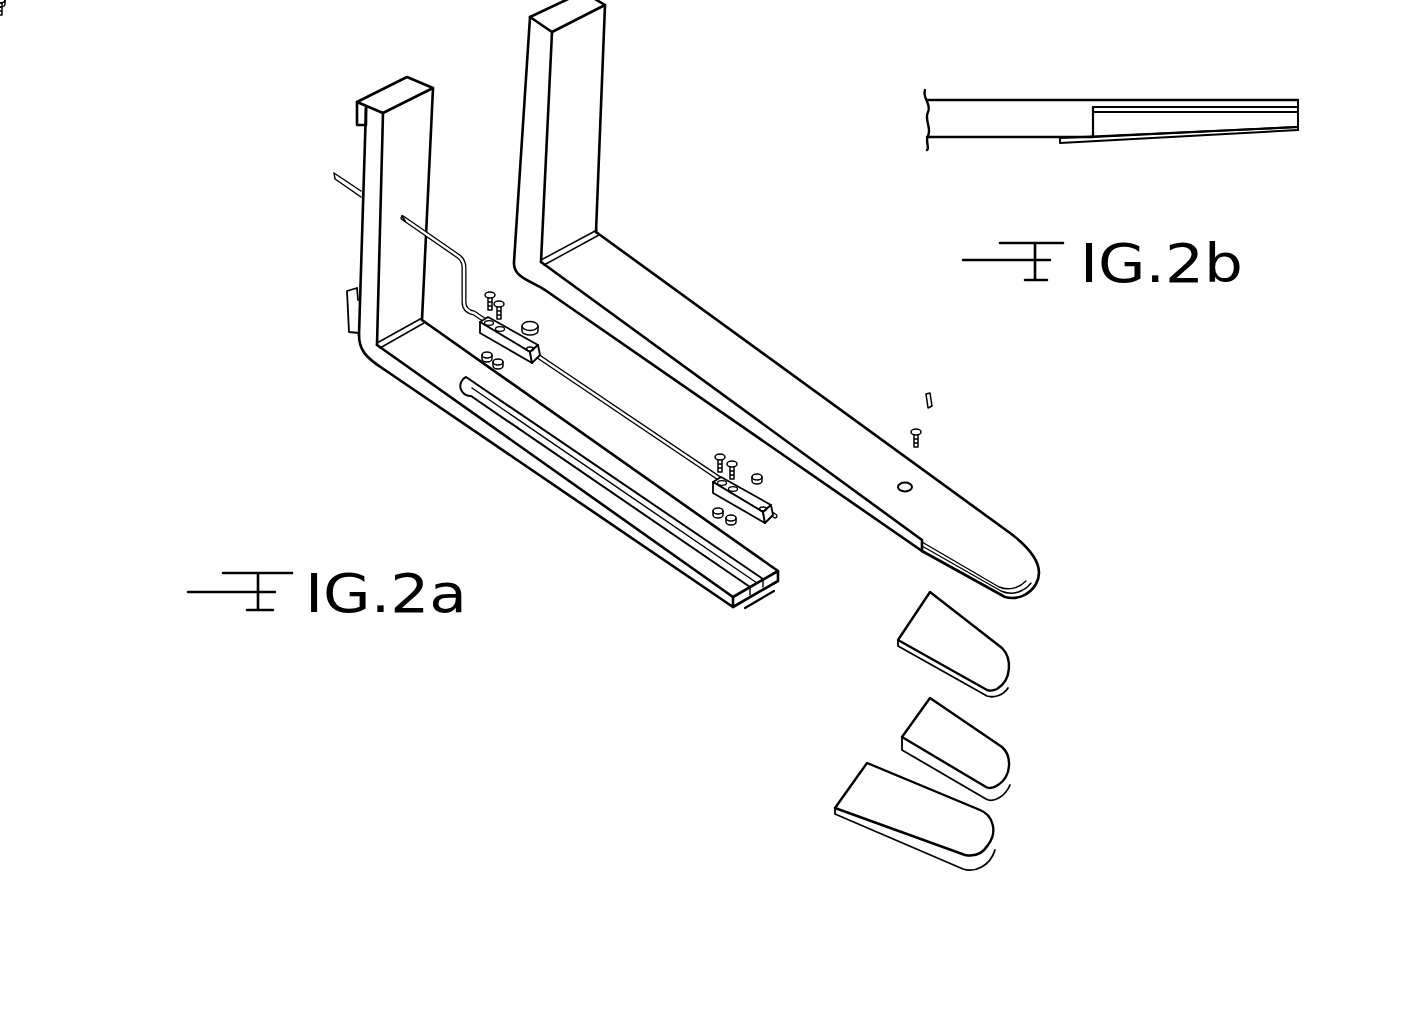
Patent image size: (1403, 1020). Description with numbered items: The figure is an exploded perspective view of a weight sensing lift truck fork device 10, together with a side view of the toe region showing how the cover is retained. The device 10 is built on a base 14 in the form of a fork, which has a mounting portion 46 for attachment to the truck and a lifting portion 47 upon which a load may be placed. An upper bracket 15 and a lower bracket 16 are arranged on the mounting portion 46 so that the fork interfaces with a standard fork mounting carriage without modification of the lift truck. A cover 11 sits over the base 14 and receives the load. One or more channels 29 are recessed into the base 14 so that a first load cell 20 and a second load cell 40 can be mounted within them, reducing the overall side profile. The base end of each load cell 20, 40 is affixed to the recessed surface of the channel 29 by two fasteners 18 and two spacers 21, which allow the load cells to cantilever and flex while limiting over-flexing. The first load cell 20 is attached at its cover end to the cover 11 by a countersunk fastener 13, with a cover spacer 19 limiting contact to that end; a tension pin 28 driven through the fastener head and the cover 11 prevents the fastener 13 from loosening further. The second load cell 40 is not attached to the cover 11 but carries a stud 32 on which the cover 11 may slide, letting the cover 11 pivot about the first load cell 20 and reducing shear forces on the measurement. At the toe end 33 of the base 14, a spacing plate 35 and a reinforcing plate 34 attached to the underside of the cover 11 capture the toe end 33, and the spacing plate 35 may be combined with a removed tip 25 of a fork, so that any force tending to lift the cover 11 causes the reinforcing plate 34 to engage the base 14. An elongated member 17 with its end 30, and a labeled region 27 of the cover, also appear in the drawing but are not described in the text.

In FIG. 2A, the device 10 is at (573, 435).
In FIG. 2A, the cover 11 is at (776, 299).
In FIG. 2A, the fastener 13 is at (922, 432).
In FIG. 2A, the base 14 is at (533, 372).
In FIG. 2A, the upper bracket 15 is at (376, 93).
In FIG. 2A, the lower bracket 16 is at (348, 318).
In FIG. 2A, the rod 17 is at (437, 240).
In FIG. 2A, the fasteners 18 is at (490, 292).
In FIG. 2A, the cover spacer 19 is at (762, 478).
In FIG. 2A, the first load cell 20 is at (772, 514).
In FIG. 2A, the spacers 21 is at (484, 353).
In FIG. 2A, the removed tip 25 is at (1005, 766).
In FIG. 2B, the removed tip 25 is at (1127, 120).
In FIG. 2A, the fork blade 27 is at (752, 399).
In FIG. 2B, the fork blade 27 is at (1048, 99).
In FIG. 2A, the tension pin 28 is at (932, 398).
In FIG. 2A, the channel 29 is at (517, 412).
In FIG. 2A, the rod end 30 is at (400, 221).
In FIG. 2A, the stud 32 is at (538, 327).
In FIG. 2A, the toe end 33 is at (762, 606).
In FIG. 2A, the reinforcing plate 34 is at (995, 826).
In FIG. 2B, the reinforcing plate 34 is at (1198, 147).
In FIG. 2A, the spacing plate 35 is at (1003, 655).
In FIG. 2B, the spacing plate 35 is at (1300, 112).
In FIG. 2A, the second load cell 40 is at (540, 350).
In FIG. 2A, the mounting portion 46 is at (387, 276).
In FIG. 2A, the lifting portion 47 is at (568, 520).